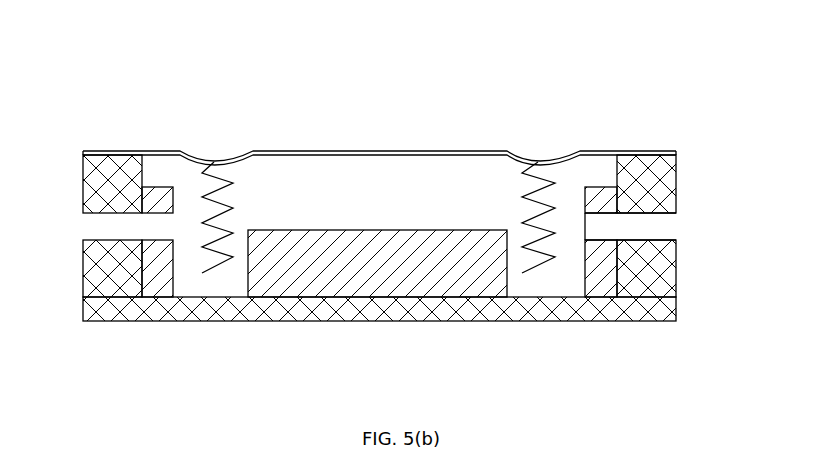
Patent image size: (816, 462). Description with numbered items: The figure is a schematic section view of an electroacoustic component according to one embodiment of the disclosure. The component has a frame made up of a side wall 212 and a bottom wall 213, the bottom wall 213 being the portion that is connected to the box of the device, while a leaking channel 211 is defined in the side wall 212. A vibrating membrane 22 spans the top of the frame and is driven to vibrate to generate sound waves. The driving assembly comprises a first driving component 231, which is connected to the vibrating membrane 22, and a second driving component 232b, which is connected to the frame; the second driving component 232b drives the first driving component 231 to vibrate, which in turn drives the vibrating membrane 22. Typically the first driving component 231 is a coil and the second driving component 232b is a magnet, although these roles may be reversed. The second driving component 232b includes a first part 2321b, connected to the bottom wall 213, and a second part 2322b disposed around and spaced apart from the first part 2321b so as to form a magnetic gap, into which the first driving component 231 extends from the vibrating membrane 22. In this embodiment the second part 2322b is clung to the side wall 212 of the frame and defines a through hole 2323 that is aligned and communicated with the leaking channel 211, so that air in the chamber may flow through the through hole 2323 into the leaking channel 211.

The leaking channel 211 is at (647, 222).
The side wall 212 is at (88, 152).
The bottom wall 213 is at (235, 312).
The vibrating membrane 22 is at (152, 150).
The first driving component 231 is at (214, 162).
The second driving component 232b is at (379, 155).
The first part 2321b is at (410, 230).
The second part 2322b is at (603, 203).
The through hole 2323 is at (600, 225).